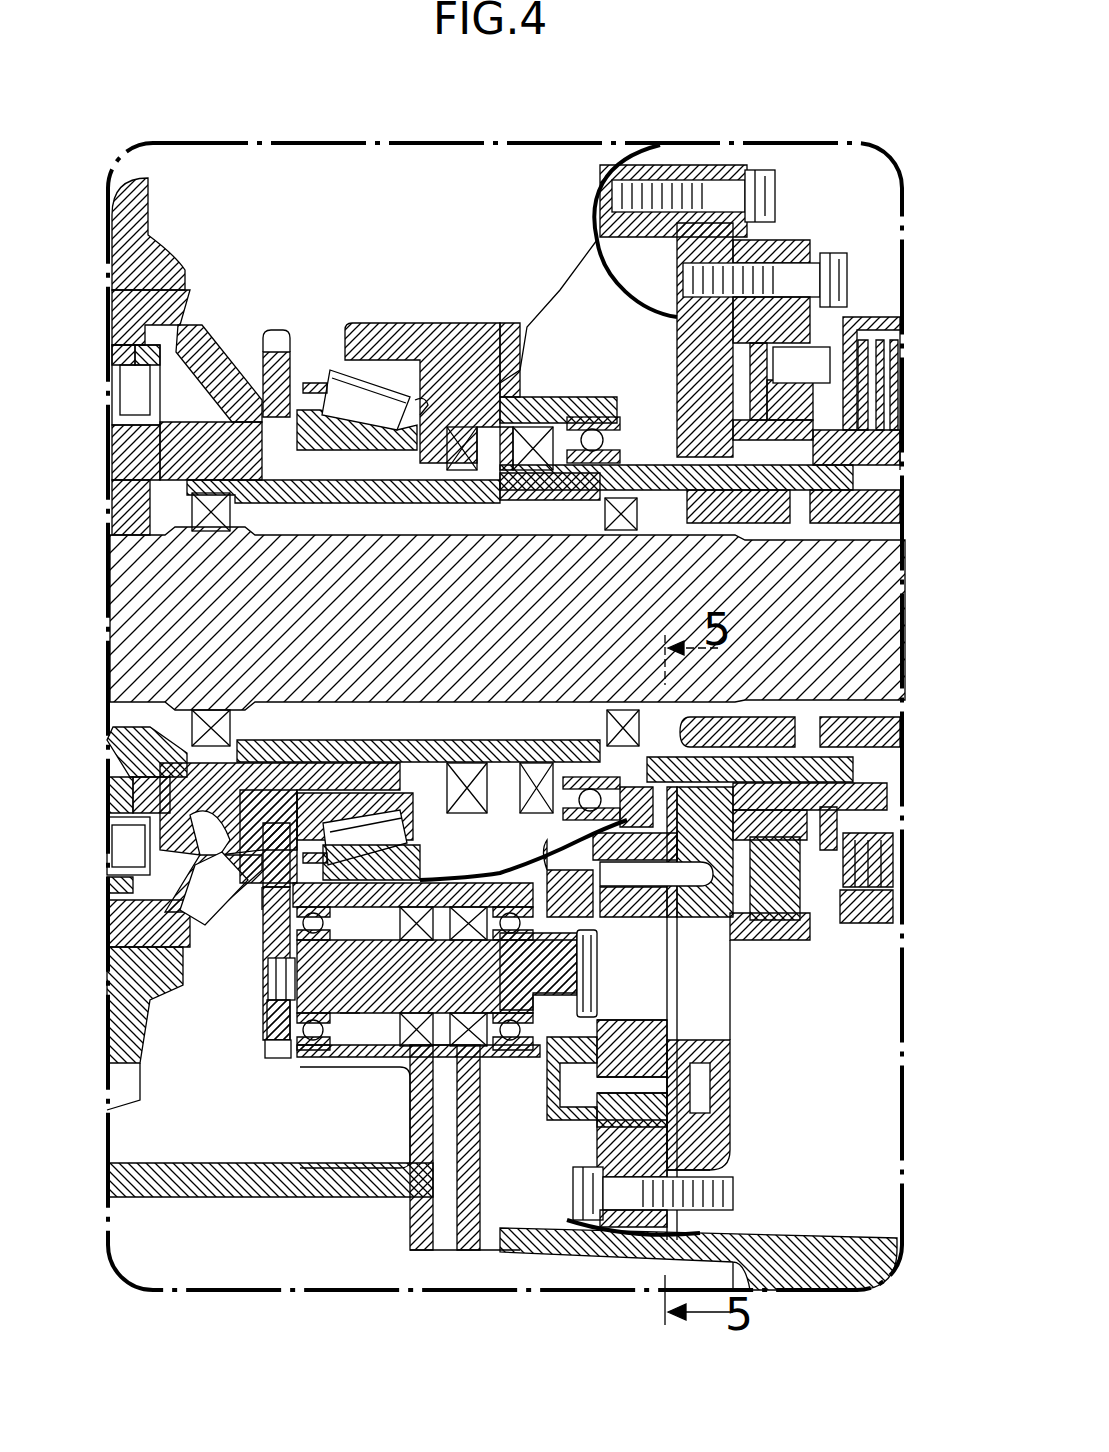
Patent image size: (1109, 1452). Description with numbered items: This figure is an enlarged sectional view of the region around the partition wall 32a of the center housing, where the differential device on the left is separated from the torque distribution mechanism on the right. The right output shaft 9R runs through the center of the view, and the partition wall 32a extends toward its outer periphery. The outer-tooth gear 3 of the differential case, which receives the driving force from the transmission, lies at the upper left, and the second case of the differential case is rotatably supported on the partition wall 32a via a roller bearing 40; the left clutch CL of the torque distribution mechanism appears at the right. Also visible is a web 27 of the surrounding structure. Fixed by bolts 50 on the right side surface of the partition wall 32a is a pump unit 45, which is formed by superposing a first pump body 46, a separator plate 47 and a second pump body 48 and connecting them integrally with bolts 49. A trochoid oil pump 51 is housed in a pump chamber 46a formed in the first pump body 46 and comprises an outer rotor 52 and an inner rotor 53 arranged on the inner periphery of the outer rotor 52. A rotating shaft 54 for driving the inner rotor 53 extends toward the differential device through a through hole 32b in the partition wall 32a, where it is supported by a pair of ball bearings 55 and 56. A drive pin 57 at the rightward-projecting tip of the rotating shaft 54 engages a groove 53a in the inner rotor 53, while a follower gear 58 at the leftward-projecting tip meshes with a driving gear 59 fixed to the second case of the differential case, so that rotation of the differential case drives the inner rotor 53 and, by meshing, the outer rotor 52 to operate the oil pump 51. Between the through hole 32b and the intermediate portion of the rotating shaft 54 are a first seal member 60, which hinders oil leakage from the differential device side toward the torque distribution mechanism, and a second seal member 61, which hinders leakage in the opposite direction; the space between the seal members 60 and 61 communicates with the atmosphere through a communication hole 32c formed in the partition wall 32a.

The outer-tooth gear 3 is at (135, 168).
The right output shaft 9R is at (507, 618).
The web 27 is at (210, 845).
The partition wall 32a is at (518, 372).
The through hole 32b is at (368, 1000).
The communication hole 32c is at (440, 1180).
The roller bearing 40 is at (345, 378).
The pump unit 45 is at (665, 782).
The first pump body 46 is at (583, 1145).
The pump chamber 46a is at (638, 1113).
The separator plate 47 is at (680, 1137).
The second pump body 48 is at (710, 1167).
The bolts 49 is at (825, 285).
The bolts 50 is at (768, 198).
The trochoid oil pump 51 is at (828, 1015).
The outer rotor 52 is at (663, 1097).
The inner rotor 53 is at (660, 1027).
The groove 53a is at (637, 1020).
The rotating shaft 54 is at (350, 1035).
The ball bearing 55 is at (313, 1063).
The ball bearing 56 is at (500, 885).
The drive pin 57 is at (597, 945).
The follower gear 58 is at (273, 1052).
The driving gear 59 is at (262, 900).
The first seal member 60 is at (400, 925).
The second seal member 61 is at (467, 1035).
The left clutch CL is at (878, 310).